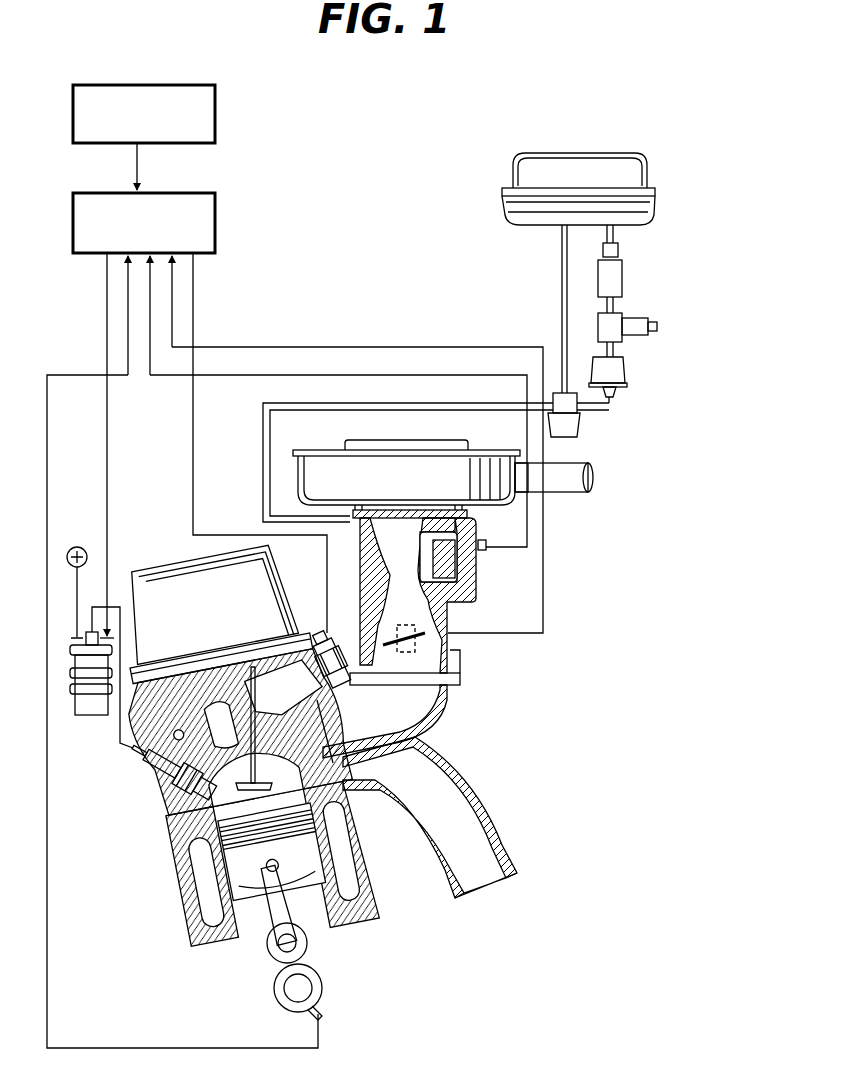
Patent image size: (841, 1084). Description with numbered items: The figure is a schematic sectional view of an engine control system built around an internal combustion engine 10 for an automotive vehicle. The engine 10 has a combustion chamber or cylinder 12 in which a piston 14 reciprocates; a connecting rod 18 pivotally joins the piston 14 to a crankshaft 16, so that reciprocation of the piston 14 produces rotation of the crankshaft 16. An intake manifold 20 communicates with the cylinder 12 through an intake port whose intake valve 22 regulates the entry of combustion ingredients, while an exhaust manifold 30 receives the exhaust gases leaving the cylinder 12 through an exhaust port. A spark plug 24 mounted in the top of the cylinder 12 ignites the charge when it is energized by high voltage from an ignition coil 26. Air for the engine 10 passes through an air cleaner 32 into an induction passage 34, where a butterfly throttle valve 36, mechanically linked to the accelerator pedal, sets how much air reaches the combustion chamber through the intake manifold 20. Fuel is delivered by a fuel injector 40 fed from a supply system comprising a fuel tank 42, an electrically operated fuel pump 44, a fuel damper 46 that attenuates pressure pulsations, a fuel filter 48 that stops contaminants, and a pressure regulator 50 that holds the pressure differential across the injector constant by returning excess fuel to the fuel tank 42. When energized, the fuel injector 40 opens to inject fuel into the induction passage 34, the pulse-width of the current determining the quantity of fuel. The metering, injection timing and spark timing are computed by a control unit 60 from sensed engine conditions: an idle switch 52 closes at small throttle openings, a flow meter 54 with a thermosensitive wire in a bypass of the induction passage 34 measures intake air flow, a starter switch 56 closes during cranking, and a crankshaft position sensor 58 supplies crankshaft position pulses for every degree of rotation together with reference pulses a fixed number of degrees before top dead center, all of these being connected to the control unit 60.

The internal combustion engine 10 is at (263, 779).
The combustion chamber or cylinder 12 is at (230, 812).
The piston 14 is at (235, 885).
The crankshaft 16 is at (297, 943).
The connecting rod 18 is at (267, 918).
The intake manifold 20 is at (440, 722).
The intake valve 22 is at (268, 773).
The spark plug 24 is at (178, 788).
The ignition coil 26 is at (91, 715).
The exhaust manifold 30 is at (517, 840).
The air cleaner 32 is at (322, 457).
The induction passage 34 is at (427, 591).
The butterfly throttle valve 36 is at (415, 640).
The fuel injector 40 is at (322, 640).
The fuel tank 42 is at (640, 160).
The fuel pump 44 is at (622, 277).
The fuel damper 46 is at (640, 325).
The fuel filter 48 is at (623, 368).
The pressure regulator 50 is at (578, 428).
The idle switch 52 is at (440, 655).
The flow meter 54 is at (467, 535).
The starter switch 56 is at (215, 110).
The crankshaft position sensor 58 is at (323, 990).
The control unit 60 is at (215, 218).